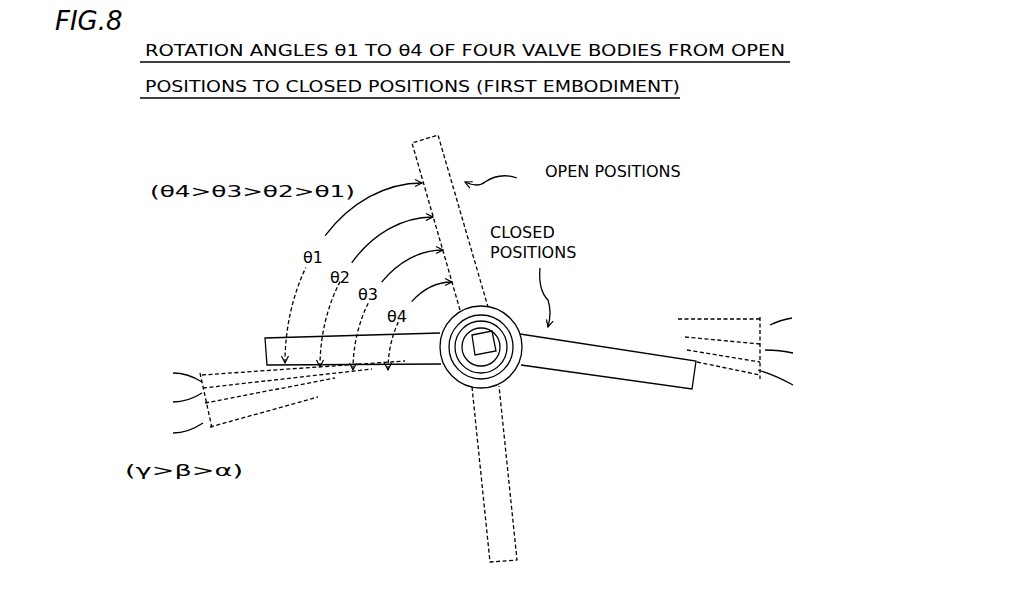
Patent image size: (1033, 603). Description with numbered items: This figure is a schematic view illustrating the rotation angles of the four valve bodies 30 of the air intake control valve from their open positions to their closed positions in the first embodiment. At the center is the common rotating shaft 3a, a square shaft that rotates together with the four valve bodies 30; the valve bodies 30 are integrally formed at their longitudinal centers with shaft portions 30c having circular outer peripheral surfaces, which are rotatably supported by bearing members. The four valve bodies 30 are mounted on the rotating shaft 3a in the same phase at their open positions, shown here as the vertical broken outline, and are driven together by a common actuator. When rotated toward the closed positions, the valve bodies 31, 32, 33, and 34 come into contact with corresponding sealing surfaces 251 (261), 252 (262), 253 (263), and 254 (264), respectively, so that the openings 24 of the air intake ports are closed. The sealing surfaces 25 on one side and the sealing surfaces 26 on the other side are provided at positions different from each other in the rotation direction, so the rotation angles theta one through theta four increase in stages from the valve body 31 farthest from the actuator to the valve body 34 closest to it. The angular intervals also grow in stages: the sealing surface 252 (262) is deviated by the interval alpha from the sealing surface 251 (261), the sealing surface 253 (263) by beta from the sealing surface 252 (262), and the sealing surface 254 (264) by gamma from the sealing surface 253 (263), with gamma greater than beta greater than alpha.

The valve body 30 is at (480, 337).
The valve body 31 is at (450, 222).
The valve body 32 is at (494, 474).
The valve body 33 is at (353, 349).
The valve body 34 is at (608, 361).
The shaft portion 30c is at (521, 373).
The rotating shaft 3a is at (478, 355).
The opening 24 is at (602, 273).
The sealing surface 25 is at (280, 406).
The sealing surface 251 is at (248, 362).
The sealing surface 252 is at (271, 376).
The sealing surface 253 is at (261, 389).
The sealing surface 254 is at (264, 411).
The sealing surface 26 is at (683, 335).
The sealing surface 261 is at (712, 367).
The sealing surface 262 is at (691, 350).
The sealing surface 263 is at (689, 337).
The sealing surface 264 is at (718, 319).